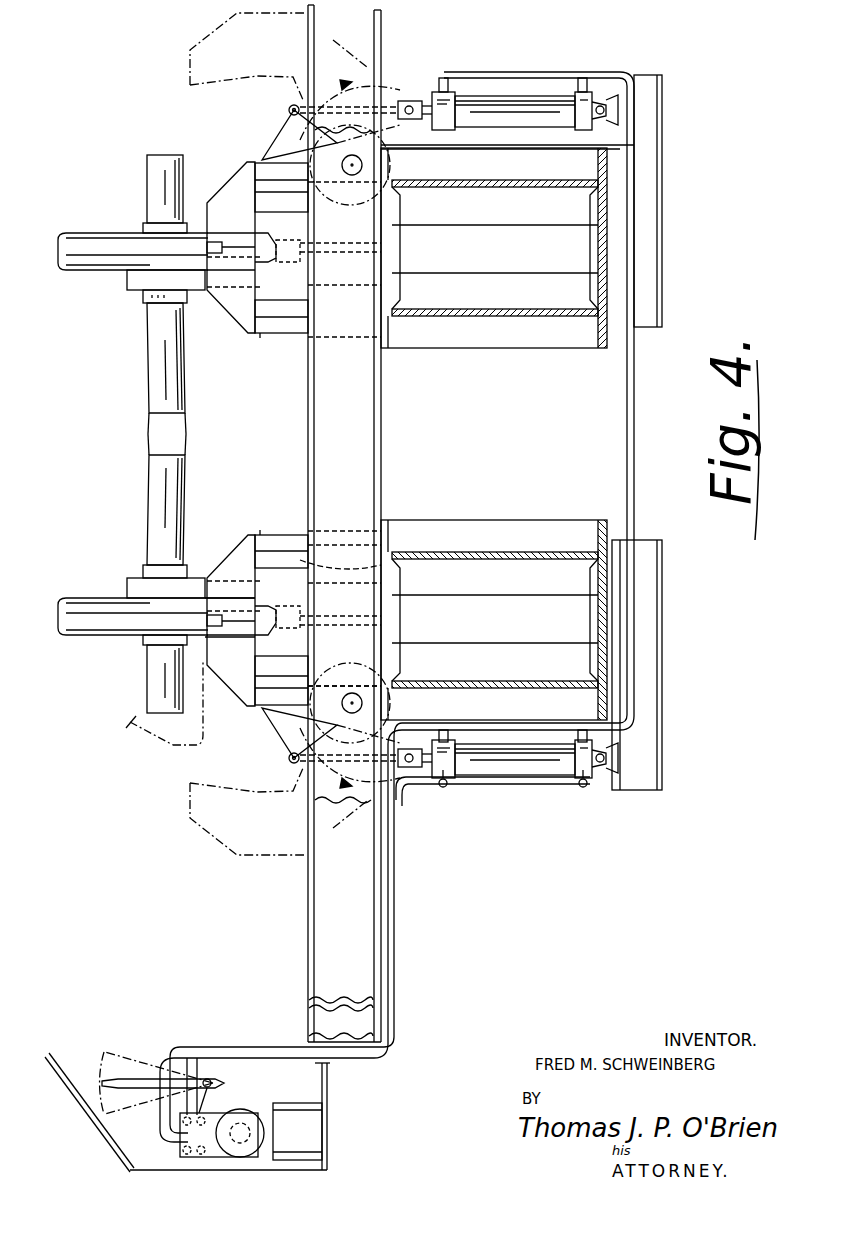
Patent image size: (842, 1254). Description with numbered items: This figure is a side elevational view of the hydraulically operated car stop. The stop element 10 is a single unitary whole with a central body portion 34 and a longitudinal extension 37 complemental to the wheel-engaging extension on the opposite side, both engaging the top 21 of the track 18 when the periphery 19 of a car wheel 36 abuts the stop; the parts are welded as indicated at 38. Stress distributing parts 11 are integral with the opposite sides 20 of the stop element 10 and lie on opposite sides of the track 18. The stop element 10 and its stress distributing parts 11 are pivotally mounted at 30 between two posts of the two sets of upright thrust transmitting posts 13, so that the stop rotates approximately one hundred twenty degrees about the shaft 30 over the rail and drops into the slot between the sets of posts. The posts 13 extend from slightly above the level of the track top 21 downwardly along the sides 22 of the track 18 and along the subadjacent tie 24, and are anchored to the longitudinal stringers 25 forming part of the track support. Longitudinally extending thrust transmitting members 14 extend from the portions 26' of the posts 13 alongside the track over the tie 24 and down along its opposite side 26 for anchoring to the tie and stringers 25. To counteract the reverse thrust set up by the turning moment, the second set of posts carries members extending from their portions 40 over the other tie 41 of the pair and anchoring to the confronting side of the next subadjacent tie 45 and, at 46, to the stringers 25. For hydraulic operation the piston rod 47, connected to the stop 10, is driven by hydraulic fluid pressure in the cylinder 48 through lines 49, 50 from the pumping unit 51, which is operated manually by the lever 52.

The stop element 10 is at (226, 612).
The stress distributing parts 11 is at (244, 624).
The upright thrust transmitting posts 13 is at (270, 534).
The longitudinally extending thrust transmitting members 14 is at (338, 558).
The track 18 is at (318, 250).
The car wheel periphery 19 is at (200, 292).
The opposite sides of stop element 20 is at (233, 434).
The top of the track 21 is at (287, 434).
The sides of the track 22 is at (278, 256).
The subadjacent tie 24 is at (318, 797).
The longitudinal stringer 25 is at (490, 188).
The opposite side of tie 26 is at (367, 486).
The portions of posts alongside track 26' is at (258, 434).
The pivot shaft 30 is at (363, 165).
The central body portion 34 is at (190, 228).
The car wheel 36 is at (84, 272).
The stop extension 37 is at (222, 246).
The weld 38 is at (378, 572).
The portions of posts 40 is at (262, 160).
The other tie 41 is at (306, 972).
The next subadjacent tie 45 is at (306, 1010).
The anchoring point to stringers 46 is at (384, 540).
The piston rod 47 is at (337, 80).
The cylinder 48 is at (524, 103).
The hydraulic line 49 is at (419, 785).
The hydraulic line 50 is at (478, 72).
The pumping unit 51 is at (240, 1112).
The lever 52 is at (118, 1068).